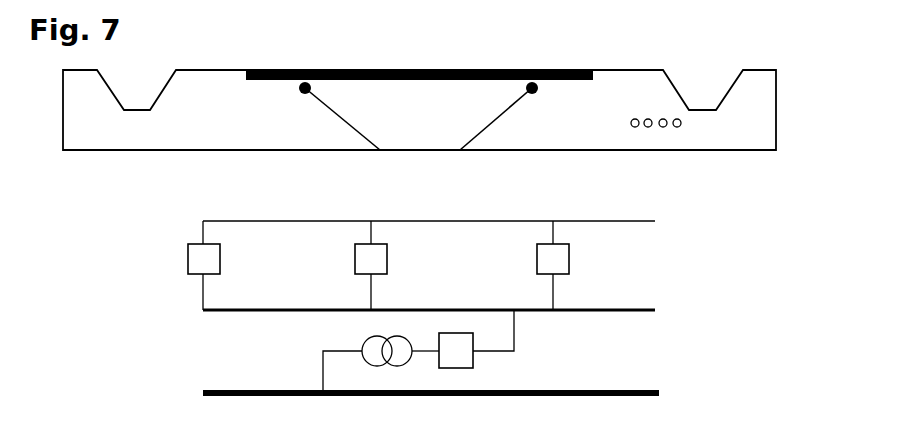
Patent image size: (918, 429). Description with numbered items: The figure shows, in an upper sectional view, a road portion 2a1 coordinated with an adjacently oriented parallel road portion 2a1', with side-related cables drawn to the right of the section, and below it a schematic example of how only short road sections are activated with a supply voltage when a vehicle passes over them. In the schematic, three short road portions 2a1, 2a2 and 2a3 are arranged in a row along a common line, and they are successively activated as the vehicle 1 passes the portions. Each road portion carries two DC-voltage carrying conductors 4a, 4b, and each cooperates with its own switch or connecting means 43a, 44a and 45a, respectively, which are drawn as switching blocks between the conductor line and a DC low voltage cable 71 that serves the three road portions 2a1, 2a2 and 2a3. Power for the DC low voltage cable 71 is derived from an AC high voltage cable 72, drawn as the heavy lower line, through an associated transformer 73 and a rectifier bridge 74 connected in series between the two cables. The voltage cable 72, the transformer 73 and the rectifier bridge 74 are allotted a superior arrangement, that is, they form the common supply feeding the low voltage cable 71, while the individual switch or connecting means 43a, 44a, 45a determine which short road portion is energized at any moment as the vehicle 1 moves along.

The vehicle 1 is at (282, 221).
The road portion 2a1 is at (313, 171).
The parallel road portion 2a1' is at (506, 91).
The road portion 2a2 is at (429, 247).
The road portion 2a3 is at (600, 247).
The DC-voltage carrying conductor 4a is at (332, 221).
The DC-voltage carrying conductor 4b is at (466, 242).
The switch or connecting means 43a is at (188, 259).
The switch or connecting means 44a is at (355, 259).
The switch or connecting means 45a is at (537, 257).
The DC low voltage cable 71 is at (627, 117).
The AC high voltage cable 72 is at (263, 393).
The transformer 73 is at (367, 343).
The rectifier bridge 74 is at (463, 358).